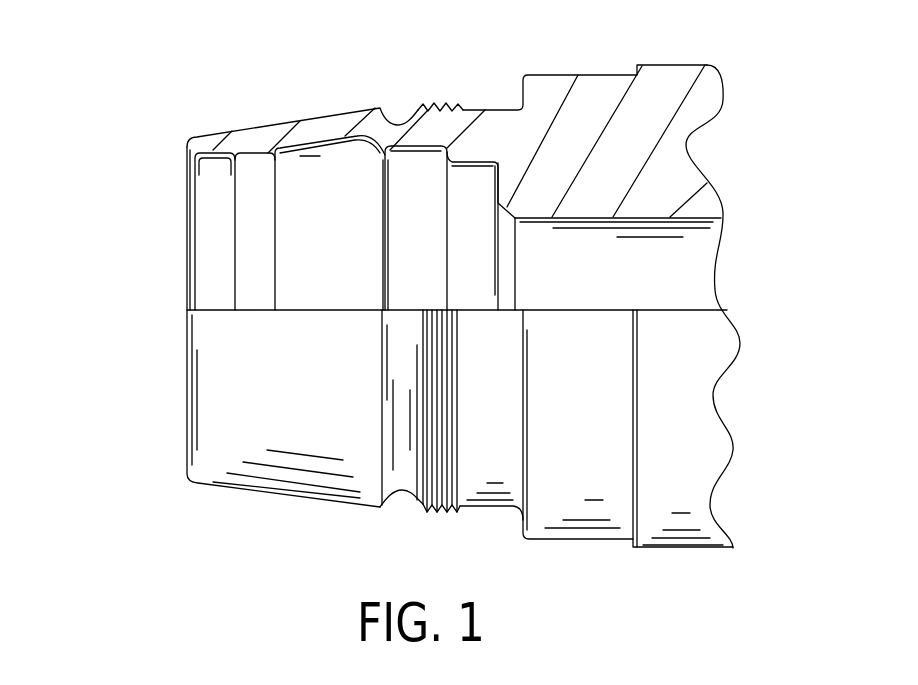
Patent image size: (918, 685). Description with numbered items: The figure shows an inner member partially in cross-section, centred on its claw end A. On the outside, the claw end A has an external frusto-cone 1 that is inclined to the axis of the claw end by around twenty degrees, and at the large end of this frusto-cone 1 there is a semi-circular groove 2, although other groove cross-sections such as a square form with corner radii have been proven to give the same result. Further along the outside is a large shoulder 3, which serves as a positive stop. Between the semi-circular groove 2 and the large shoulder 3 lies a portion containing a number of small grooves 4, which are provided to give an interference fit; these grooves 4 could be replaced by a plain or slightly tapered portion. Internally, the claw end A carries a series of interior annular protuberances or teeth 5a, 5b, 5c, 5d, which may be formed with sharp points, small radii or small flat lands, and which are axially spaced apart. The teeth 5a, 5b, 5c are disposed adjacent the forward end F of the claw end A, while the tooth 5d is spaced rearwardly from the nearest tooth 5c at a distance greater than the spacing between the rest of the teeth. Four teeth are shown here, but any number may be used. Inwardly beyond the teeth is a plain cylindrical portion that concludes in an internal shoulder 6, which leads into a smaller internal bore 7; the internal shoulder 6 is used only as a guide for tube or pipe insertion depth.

The claw end A is at (231, 88).
The forward end F is at (187, 417).
The external frusto-cone 1 is at (259, 493).
The semi-circular groove 2 is at (402, 500).
The large shoulder 3 is at (518, 535).
The small grooves 4 is at (437, 103).
The tooth 5a is at (192, 157).
The tooth 5b is at (228, 157).
The tooth 5c is at (277, 156).
The tooth 5d is at (385, 163).
The internal shoulder 6 is at (502, 165).
The internal bore 7 is at (638, 207).